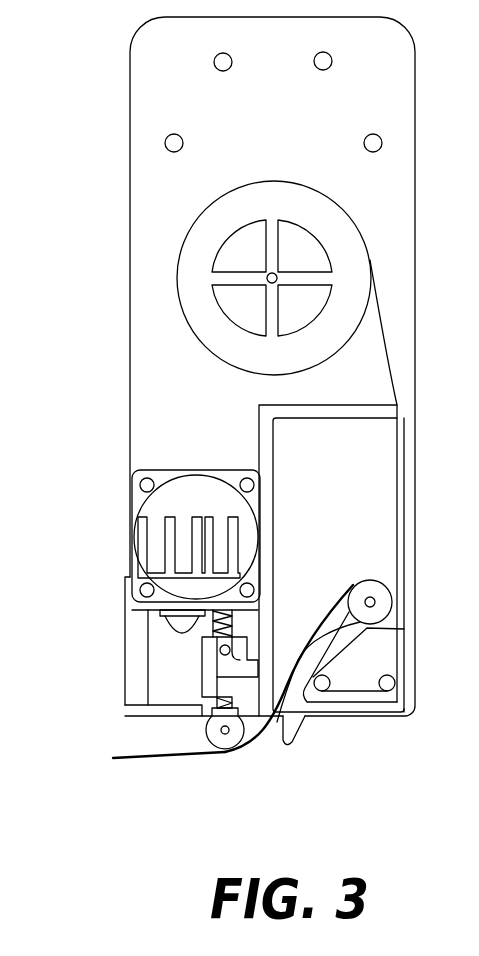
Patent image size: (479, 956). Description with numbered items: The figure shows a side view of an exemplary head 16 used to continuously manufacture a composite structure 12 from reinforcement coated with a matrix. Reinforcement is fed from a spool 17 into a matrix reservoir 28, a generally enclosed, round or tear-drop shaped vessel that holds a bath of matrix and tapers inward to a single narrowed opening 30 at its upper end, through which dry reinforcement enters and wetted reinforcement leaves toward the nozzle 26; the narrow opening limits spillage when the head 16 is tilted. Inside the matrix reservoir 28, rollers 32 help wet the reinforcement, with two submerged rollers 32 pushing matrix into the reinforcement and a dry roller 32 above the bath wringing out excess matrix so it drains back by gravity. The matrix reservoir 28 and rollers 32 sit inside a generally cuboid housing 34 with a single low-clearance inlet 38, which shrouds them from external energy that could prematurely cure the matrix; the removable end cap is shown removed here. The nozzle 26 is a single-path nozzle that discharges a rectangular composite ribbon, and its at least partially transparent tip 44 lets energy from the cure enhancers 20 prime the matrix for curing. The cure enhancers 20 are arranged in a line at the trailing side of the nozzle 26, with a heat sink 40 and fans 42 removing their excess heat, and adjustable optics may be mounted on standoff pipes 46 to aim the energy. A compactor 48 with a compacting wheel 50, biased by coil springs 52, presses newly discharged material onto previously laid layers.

The composite structure 12 is at (140, 760).
The head 16 is at (442, 737).
The spool 17 is at (355, 220).
The cure enhancer 20 is at (177, 633).
The nozzle 26 is at (288, 725).
The matrix reservoir 28 is at (371, 668).
The opening 30 is at (388, 578).
The roller 32 is at (352, 590).
The housing 34 is at (347, 468).
The inlet 38 is at (404, 418).
The heat sink 40 is at (178, 581).
The fan 42 is at (160, 468).
The tip 44 is at (143, 718).
The standoff pipe 46 is at (125, 656).
The compactor 48 is at (259, 771).
The compacting wheel 50 is at (207, 734).
The spring 52 is at (260, 617).